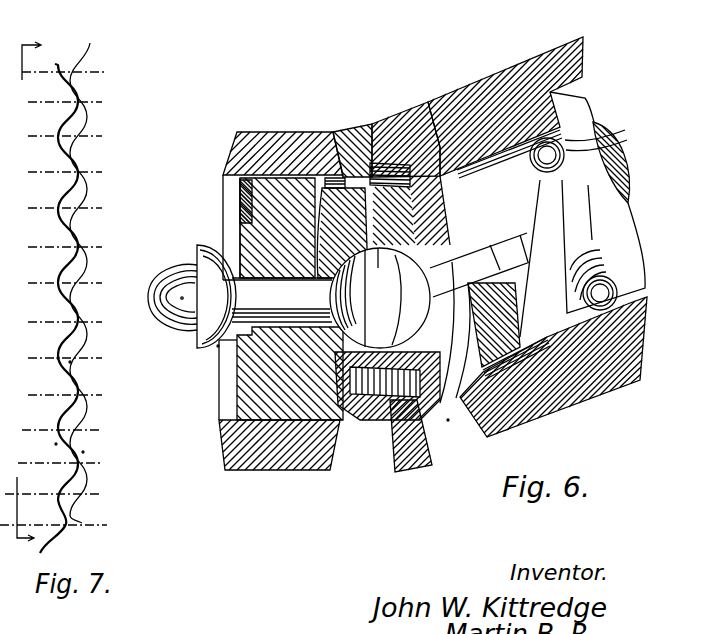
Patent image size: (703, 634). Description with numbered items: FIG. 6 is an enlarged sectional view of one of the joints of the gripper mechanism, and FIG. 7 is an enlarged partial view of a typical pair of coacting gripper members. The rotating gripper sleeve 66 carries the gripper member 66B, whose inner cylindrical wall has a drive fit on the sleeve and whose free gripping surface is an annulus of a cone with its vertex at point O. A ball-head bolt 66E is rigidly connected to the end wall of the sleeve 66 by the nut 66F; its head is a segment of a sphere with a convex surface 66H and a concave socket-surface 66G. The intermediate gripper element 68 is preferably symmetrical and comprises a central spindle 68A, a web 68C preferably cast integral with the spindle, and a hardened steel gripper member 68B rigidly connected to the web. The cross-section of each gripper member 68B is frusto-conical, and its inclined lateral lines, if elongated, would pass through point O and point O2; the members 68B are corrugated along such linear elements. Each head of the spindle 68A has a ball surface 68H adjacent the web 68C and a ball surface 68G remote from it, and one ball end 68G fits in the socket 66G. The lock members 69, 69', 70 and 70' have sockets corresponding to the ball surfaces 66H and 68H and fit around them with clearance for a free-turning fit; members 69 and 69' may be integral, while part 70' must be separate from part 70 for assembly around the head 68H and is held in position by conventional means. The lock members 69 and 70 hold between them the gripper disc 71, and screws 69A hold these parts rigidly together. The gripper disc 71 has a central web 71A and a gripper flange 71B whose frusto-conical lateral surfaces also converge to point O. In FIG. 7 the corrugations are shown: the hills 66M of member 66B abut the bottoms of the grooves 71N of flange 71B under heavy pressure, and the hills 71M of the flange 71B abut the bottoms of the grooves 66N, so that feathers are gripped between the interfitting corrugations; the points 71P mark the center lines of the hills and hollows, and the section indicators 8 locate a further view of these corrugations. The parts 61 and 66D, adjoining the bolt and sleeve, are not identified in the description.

In FIG. 6, the gripper sleeve 66 is at (515, 68).
In FIG. 7, the gripper member 66B is at (85, 452).
In FIG. 6, the gripper member 66B is at (407, 112).
In FIG. 6, the cylinder cap 66D is at (586, 100).
In FIG. 6, the ball-head bolt 66E is at (443, 320).
In FIG. 6, the nut 66F is at (502, 224).
In FIG. 6, the concave socket-surface 66G is at (457, 325).
In FIG. 6, the convex surface 66H is at (500, 168).
In FIG. 7, the hills 66M is at (70, 362).
In FIG. 7, the grooves 66N is at (82, 246).
In FIG. 6, the lens member 61 is at (612, 140).
In FIG. 6, the intermediate gripper element 68 is at (250, 377).
In FIG. 6, the central spindle 68A is at (218, 346).
In FIG. 6, the gripper member 68B is at (288, 138).
In FIG. 6, the web 68C is at (256, 210).
In FIG. 6, the ball surface 68G is at (170, 266).
In FIG. 6, the ball surface 68H is at (232, 262).
In FIG. 6, the lock member 69 is at (450, 350).
In FIG. 6, the lock member 69' is at (411, 210).
In FIG. 6, the screws 69A is at (448, 420).
In FIG. 6, the lock member 70 is at (387, 396).
In FIG. 6, the lock member 70' is at (290, 299).
In FIG. 6, the gripper disc 71 is at (412, 472).
In FIG. 6, the central web 71A is at (410, 172).
In FIG. 7, the gripper flange 71B is at (52, 444).
In FIG. 6, the gripper flange 71B is at (352, 128).
In FIG. 7, the hills 71M is at (78, 247).
In FIG. 7, the grooves 71N is at (58, 358).
In FIG. 7, the points 71P is at (56, 74).
In FIG. 7, the section line 8 is at (29, 295).
In FIG. 6, the point O² O2 is at (181, 299).